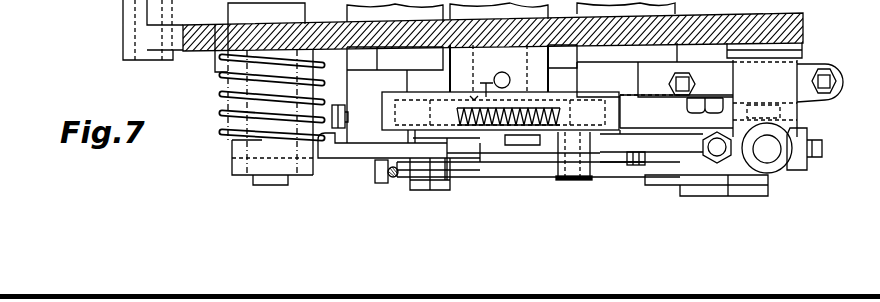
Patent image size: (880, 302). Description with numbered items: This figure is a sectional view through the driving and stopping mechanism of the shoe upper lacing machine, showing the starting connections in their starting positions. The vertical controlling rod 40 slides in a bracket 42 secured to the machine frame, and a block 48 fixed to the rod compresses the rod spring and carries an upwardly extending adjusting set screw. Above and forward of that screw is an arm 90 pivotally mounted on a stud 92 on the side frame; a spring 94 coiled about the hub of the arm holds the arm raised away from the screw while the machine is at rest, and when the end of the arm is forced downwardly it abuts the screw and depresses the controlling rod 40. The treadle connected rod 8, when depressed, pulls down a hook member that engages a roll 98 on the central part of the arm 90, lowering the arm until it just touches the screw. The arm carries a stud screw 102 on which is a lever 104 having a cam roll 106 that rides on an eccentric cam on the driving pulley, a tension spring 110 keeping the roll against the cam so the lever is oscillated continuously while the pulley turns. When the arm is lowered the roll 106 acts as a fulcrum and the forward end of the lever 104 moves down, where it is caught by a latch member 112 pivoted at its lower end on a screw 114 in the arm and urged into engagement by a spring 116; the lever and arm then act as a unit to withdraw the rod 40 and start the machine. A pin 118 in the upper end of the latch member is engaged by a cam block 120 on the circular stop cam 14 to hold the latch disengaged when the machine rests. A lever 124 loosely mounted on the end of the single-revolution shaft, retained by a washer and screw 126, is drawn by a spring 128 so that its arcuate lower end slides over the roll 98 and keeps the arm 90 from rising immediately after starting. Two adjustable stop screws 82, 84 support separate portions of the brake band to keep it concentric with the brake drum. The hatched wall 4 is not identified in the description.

The wall 4 is at (803, 21).
The treadle connected rod 8 is at (472, 98).
The stop cam 14 is at (388, 97).
The controlling rod 40 is at (776, 160).
The bracket 42 is at (750, 137).
The block 48 is at (800, 138).
The adjustable stop screw 82 is at (842, 78).
The adjustable stop screw 84 is at (696, 84).
The arm 90 is at (340, 160).
The stud 92 is at (232, 166).
The spring 94 is at (220, 113).
The roll 98 is at (518, 82).
The stud screw 102 is at (572, 181).
The lever 104 is at (522, 179).
The cam roll 106 is at (683, 187).
The tension spring 110 is at (630, 164).
The latch member 112 is at (430, 181).
The screw 114 is at (440, 181).
The spring 116 is at (392, 178).
The pin 118 is at (437, 133).
The cam block 120 is at (390, 141).
The lever 124 is at (580, 98).
The washer and screw 126 is at (515, 140).
The spring 128 is at (520, 113).